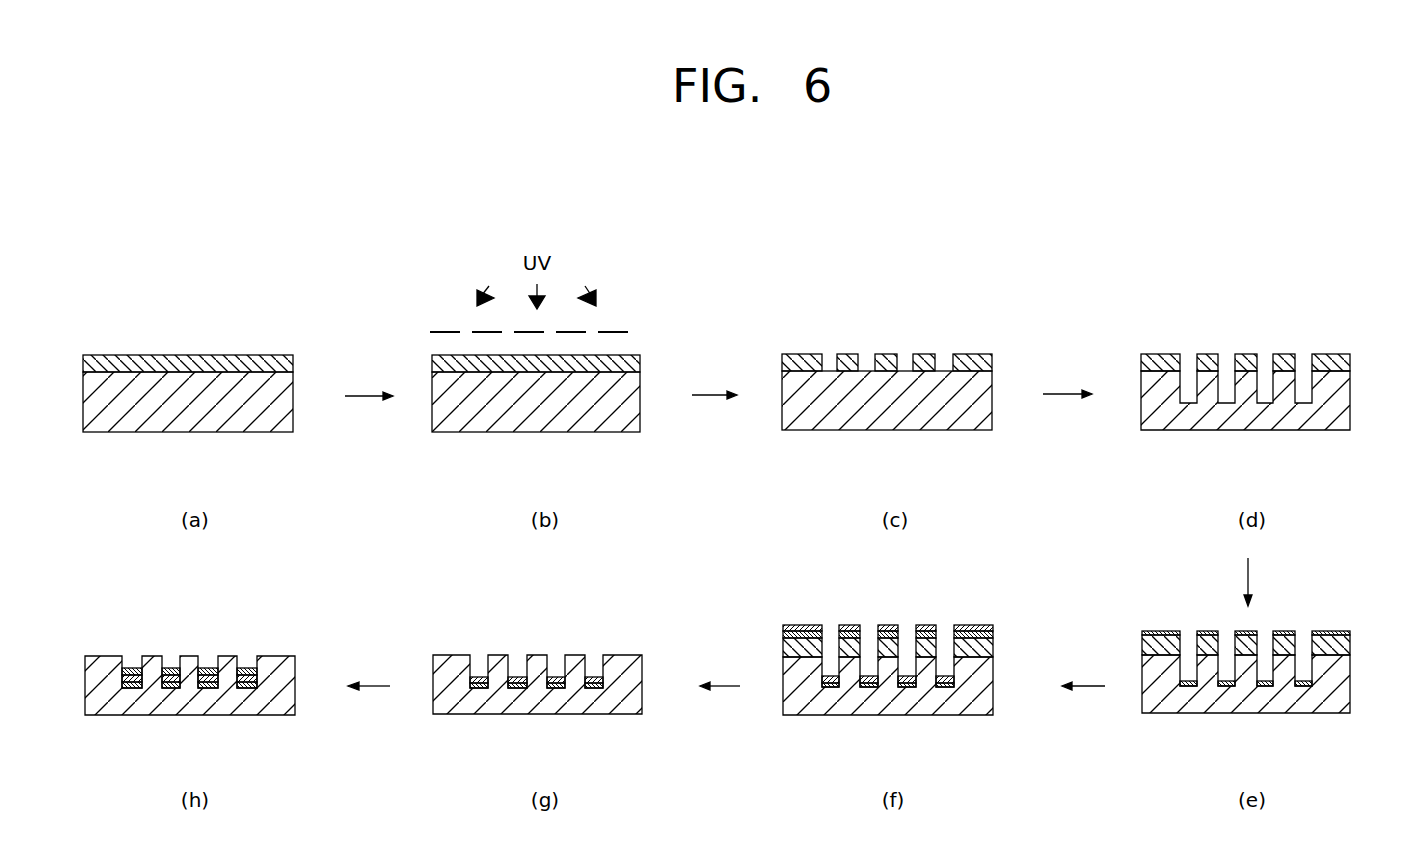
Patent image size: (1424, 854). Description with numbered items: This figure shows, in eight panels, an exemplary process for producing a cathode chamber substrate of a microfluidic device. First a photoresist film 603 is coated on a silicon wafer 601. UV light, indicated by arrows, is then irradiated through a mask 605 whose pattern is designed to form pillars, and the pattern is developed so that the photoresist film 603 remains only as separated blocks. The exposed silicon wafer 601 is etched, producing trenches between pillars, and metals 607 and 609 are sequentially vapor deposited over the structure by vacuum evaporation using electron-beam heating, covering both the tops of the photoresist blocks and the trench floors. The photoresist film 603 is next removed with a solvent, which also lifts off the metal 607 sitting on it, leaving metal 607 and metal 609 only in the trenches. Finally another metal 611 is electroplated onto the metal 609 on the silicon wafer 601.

The silicon wafer 601 is at (260, 420).
The photoresist film 603 is at (260, 355).
The mask 605 is at (612, 331).
The metal 607 is at (1335, 631).
The metal 609 is at (965, 625).
The metal 611 is at (245, 668).